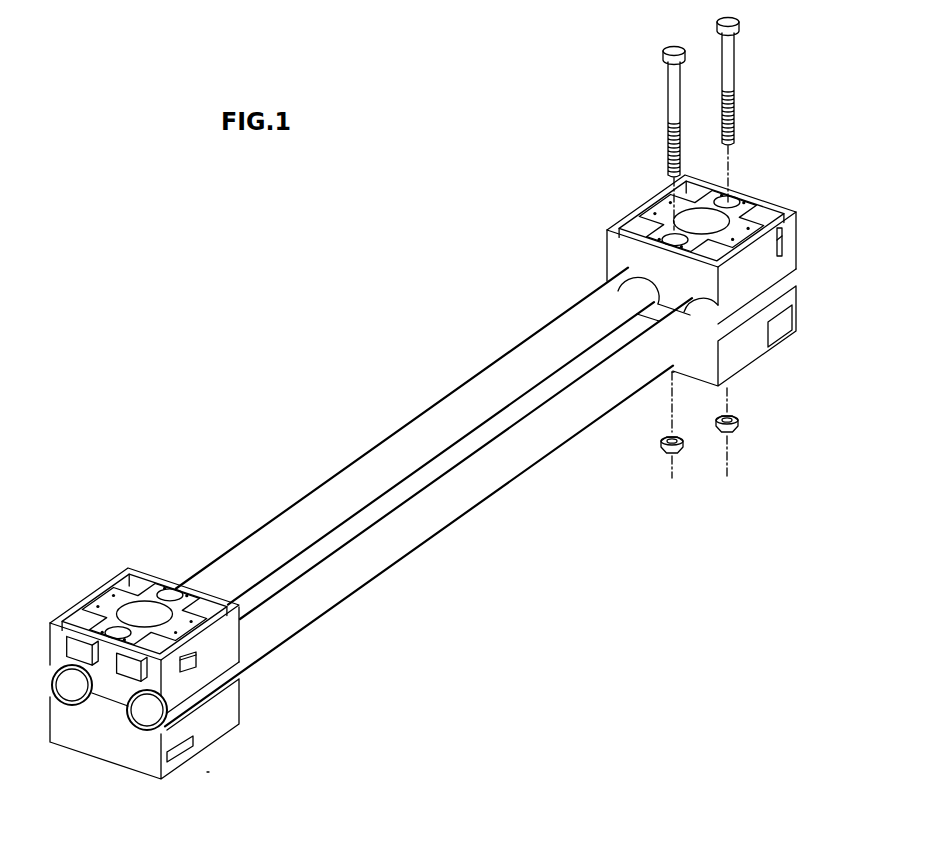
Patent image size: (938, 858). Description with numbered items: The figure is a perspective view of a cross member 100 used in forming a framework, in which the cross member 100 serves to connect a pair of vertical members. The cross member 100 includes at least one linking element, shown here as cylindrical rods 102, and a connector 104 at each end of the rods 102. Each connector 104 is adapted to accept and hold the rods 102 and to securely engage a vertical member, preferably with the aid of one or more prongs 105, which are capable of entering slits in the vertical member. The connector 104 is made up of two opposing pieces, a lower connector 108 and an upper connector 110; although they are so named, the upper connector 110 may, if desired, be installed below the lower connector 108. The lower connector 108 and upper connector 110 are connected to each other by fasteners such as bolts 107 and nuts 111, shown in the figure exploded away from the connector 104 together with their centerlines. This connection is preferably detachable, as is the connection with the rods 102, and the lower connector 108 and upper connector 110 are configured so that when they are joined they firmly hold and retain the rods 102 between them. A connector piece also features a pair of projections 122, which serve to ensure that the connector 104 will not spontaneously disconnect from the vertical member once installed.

The cross member 100 is at (470, 307).
The rod 102 is at (368, 473).
The connector 104 is at (226, 828).
The prong 105 is at (759, 197).
The bolt 107 is at (672, 99).
The lower connector 108 is at (786, 298).
The upper connector 110 is at (786, 252).
The nut 111 is at (686, 460).
The projection 122 is at (784, 335).